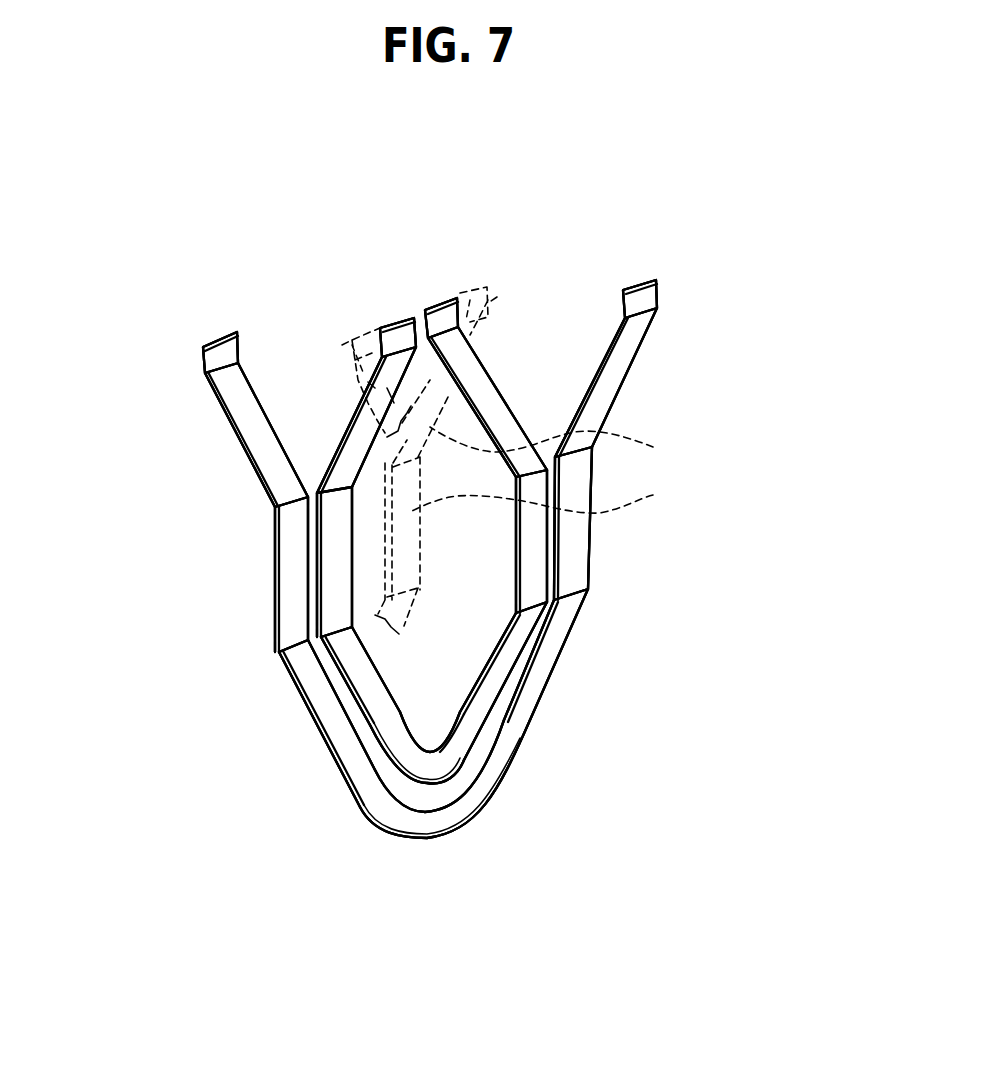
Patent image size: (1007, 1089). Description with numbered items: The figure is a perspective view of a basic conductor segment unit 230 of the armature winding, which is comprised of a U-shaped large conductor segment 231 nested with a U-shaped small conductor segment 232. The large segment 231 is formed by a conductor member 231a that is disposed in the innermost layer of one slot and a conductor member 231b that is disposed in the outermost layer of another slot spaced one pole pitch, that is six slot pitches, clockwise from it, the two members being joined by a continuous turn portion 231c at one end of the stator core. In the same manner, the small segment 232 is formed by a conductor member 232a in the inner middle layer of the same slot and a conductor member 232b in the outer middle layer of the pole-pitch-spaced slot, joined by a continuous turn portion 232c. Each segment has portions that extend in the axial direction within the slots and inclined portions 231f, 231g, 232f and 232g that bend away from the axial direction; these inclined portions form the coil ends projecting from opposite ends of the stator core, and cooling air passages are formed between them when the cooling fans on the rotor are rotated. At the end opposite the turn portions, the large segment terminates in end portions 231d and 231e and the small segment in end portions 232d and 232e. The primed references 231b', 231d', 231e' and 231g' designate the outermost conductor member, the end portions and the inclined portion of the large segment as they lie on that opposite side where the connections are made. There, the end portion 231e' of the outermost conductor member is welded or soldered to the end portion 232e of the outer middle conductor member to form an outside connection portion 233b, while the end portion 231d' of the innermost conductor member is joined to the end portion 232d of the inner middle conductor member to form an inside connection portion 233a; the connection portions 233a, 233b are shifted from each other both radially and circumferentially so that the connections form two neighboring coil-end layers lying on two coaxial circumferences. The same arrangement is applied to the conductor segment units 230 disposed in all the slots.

The basic conductor segment unit 230 is at (362, 813).
The large conductor segment 231 is at (627, 387).
The conductor member 231a is at (288, 537).
The conductor member 231b is at (644, 584).
The turn portion 231c is at (422, 826).
The left bent end portion of outer band 231d is at (183, 419).
The right bent end portion of outer band 231e is at (688, 339).
The inclined portion 231f is at (311, 712).
The inclined portion 231g is at (437, 477).
The bend position before bending (imaginary) 231g' is at (600, 449).
The conductor member 231b' is at (590, 498).
The end portion 231d' is at (296, 337).
The end portion 231e' is at (532, 279).
The small conductor segment 232 is at (536, 409).
The conductor member 232a is at (342, 593).
The conductor member 232b is at (533, 590).
The turn portion 232c is at (432, 772).
The end portion 232d is at (407, 327).
The end portion 232e is at (445, 320).
The inclined portion 232f is at (493, 687).
The inclined portion 232g is at (348, 435).
The inside connection portion 233a is at (375, 294).
The outside connection portion 233b is at (473, 258).